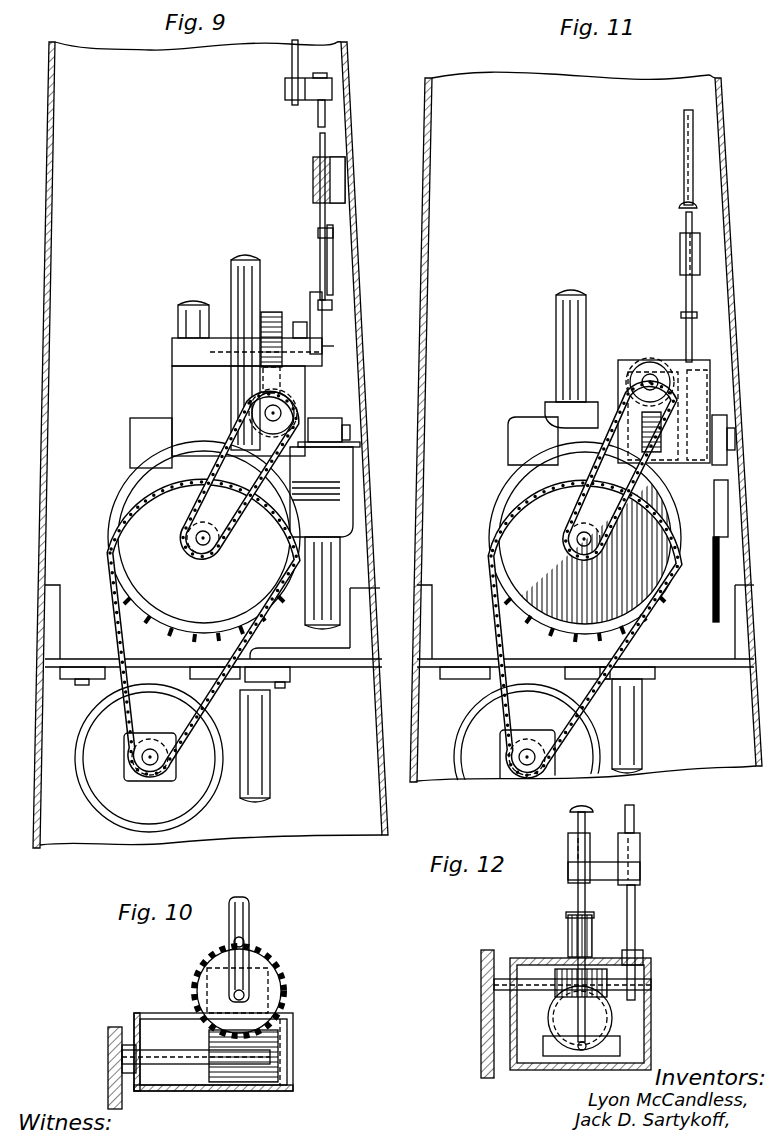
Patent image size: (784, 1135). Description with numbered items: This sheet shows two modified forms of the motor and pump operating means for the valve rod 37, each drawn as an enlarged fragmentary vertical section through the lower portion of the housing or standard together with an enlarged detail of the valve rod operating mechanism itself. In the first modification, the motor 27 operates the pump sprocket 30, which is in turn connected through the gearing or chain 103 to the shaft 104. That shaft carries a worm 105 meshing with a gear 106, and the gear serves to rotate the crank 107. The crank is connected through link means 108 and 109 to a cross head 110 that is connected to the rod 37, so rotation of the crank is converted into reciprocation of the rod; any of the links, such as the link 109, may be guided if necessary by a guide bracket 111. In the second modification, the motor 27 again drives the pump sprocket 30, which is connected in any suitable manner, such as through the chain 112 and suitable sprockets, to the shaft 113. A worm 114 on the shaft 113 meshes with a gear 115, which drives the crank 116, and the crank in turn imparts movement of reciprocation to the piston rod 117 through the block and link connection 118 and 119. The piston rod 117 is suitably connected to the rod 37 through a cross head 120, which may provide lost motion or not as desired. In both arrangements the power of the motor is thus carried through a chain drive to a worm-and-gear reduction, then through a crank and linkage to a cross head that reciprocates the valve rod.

In FIG. 9, the motor 27 is at (126, 818).
In FIG. 11, the motor 27 is at (476, 770).
In FIG. 9, the pump sprocket 30 is at (135, 503).
In FIG. 11, the pump sprocket 30 is at (512, 500).
In FIG. 9, the rod 37 is at (300, 50).
In FIG. 11, the rod 37 is at (695, 182).
In FIG. 12, the rod 37 is at (636, 815).
In FIG. 9, the gearing or chain 103 is at (235, 425).
In FIG. 10, the gearing or chain 103 is at (108, 1085).
In FIG. 10, the shaft 104 is at (170, 1066).
In FIG. 10, the worm 105 is at (234, 1084).
In FIG. 9, the gear 106 is at (277, 312).
In FIG. 10, the gear 106 is at (285, 990).
In FIG. 9, the crank 107 is at (320, 350).
In FIG. 10, the crank 107 is at (255, 957).
In FIG. 9, the link means 108 is at (334, 272).
In FIG. 9, the link 109 is at (327, 142).
In FIG. 9, the cross head 110 is at (334, 89).
In FIG. 9, the guide bracket 111 is at (336, 185).
In FIG. 11, the chain 112 is at (597, 420).
In FIG. 11, the shaft 113 is at (650, 378).
In FIG. 12, the shaft 113 is at (537, 982).
In FIG. 11, the worm 114 is at (667, 360).
In FIG. 12, the worm 114 is at (558, 994).
In FIG. 11, the gear 115 is at (652, 462).
In FIG. 12, the gear 115 is at (612, 1022).
In FIG. 12, the crank 116 is at (622, 1042).
In FIG. 11, the piston rod 117 is at (695, 225).
In FIG. 12, the piston rod 117 is at (578, 890).
In FIG. 12, the block 118 is at (582, 1052).
In FIG. 11, the link connection 119 is at (688, 432).
In FIG. 12, the link connection 119 is at (553, 1062).
In FIG. 11, the cross head 120 is at (702, 262).
In FIG. 12, the cross head 120 is at (642, 855).